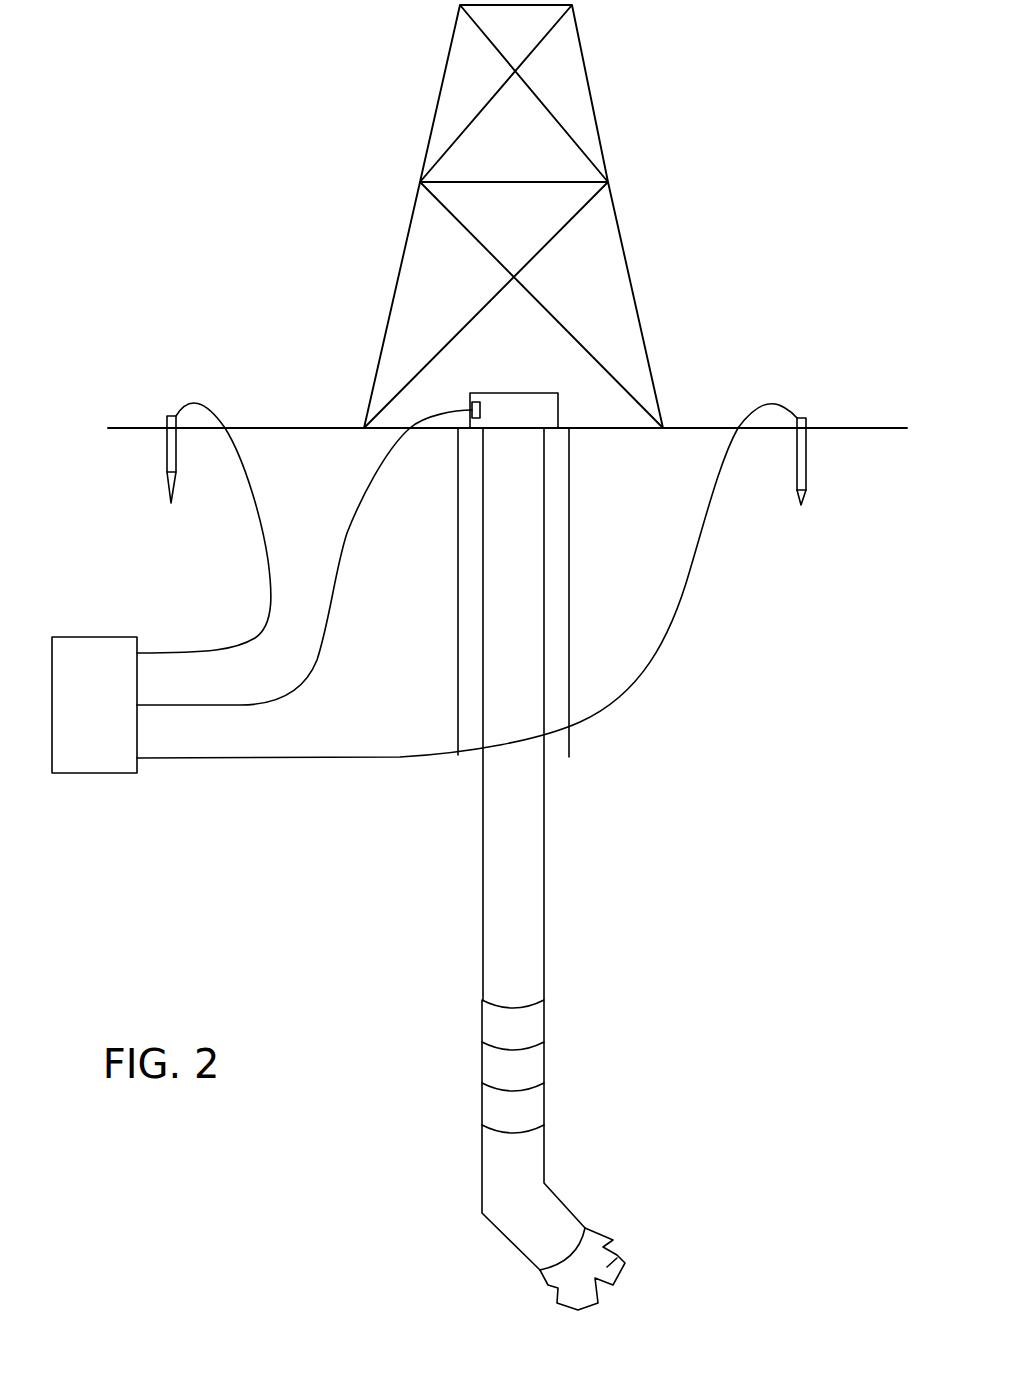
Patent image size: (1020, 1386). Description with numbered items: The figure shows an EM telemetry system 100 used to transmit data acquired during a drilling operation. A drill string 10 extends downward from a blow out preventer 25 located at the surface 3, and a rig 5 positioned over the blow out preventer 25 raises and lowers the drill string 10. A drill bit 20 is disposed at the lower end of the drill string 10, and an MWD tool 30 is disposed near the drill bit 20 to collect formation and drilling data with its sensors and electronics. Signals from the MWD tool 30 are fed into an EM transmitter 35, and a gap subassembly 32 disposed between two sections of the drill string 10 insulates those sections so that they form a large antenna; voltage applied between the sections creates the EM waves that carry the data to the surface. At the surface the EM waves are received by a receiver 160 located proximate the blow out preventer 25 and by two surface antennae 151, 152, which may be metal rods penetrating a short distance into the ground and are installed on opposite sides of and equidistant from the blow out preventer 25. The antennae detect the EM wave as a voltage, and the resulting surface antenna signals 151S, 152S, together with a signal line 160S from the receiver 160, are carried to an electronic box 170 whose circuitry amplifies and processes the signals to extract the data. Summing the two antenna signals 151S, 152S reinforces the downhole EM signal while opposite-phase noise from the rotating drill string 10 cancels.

The rig 5 is at (591, 98).
The surface 3 is at (712, 428).
The blow out preventer 25 is at (541, 393).
The receiver 160 is at (476, 402).
The surface antenna 151 is at (171, 415).
The surface antenna 152 is at (800, 417).
The electronic box 170 is at (94, 705).
The surface antenna signal 151S is at (204, 528).
The signal line from reference sensor 160S is at (304, 557).
The surface antenna signal 152S is at (467, 581).
The drill string 10 is at (544, 848).
The gap subassembly 32 is at (544, 1020).
The EM transmitter 35 is at (544, 1062).
The MWD tool 30 is at (544, 1104).
The drill bit 20 is at (620, 1261).
The telemetry system 100 is at (270, 902).